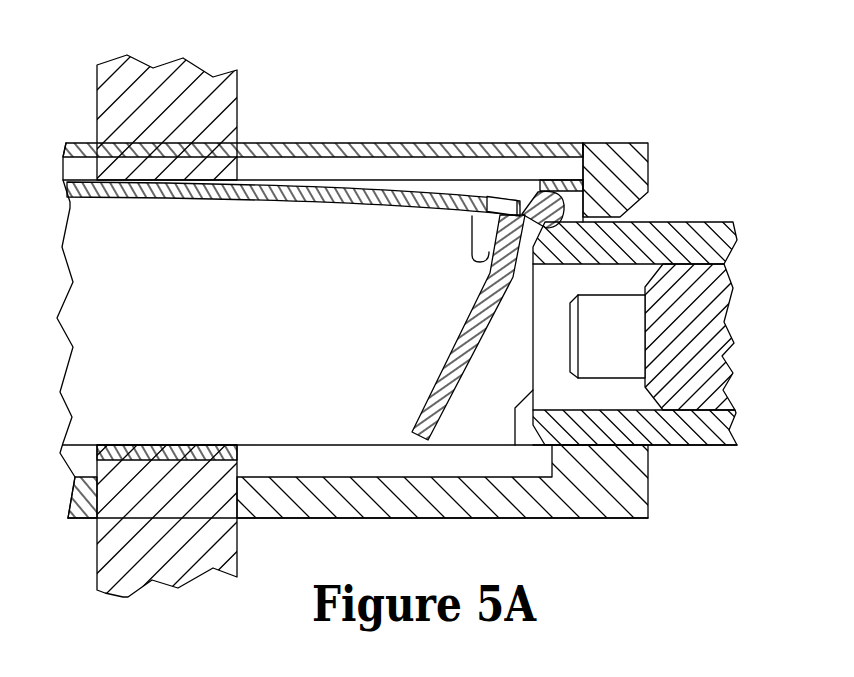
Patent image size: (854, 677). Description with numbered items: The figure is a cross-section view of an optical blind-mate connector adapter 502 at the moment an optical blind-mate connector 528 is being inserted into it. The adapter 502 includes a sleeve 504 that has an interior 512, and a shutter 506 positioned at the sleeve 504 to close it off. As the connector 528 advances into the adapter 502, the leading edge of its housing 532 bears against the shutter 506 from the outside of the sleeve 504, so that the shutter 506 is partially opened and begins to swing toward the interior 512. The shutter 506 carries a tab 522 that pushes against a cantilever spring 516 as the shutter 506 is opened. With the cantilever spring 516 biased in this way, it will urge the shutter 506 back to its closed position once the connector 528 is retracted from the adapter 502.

The optical blind-mate connector adapter 502 is at (593, 114).
The sleeve 504 is at (486, 172).
The shutter 506 is at (421, 384).
The interior 512 is at (188, 343).
The cantilever spring 516 is at (366, 207).
The tab 522 is at (489, 250).
The optical blind-mate connector 528 is at (716, 481).
The housing 532 is at (697, 222).